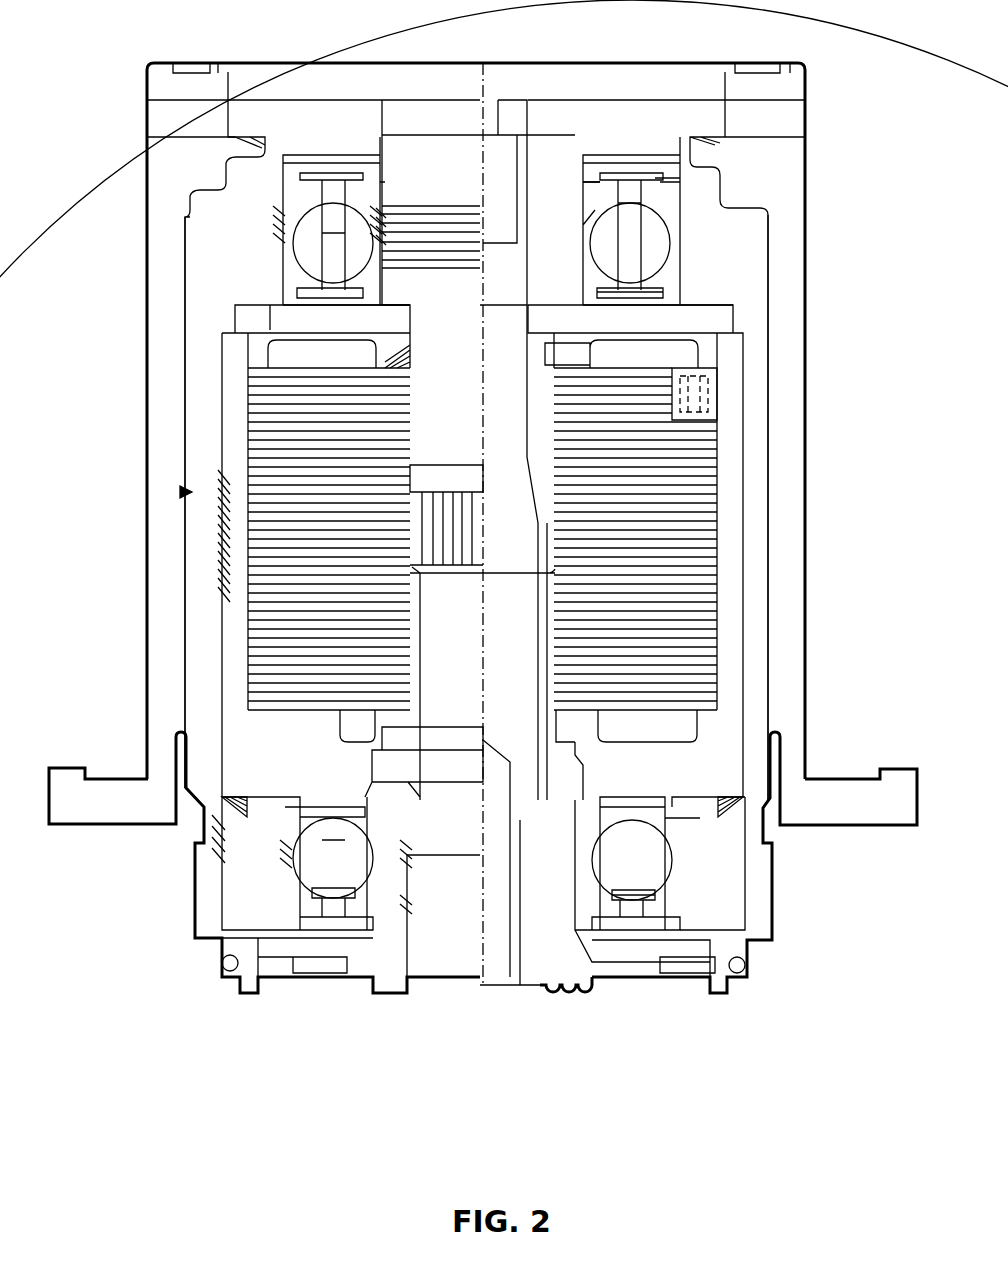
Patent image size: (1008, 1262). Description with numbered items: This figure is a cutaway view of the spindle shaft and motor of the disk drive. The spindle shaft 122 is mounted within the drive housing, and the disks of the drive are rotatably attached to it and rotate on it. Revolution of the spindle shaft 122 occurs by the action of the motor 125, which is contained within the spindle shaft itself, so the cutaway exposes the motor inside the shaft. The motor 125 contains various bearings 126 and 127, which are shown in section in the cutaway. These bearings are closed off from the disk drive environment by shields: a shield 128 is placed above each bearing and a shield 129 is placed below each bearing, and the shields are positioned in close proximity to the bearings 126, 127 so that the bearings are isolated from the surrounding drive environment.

The spindle shaft 122 is at (138, 537).
The motor 125 is at (765, 520).
The bearing 126 is at (631, 228).
The bearing 127 is at (620, 875).
The shield above bearing 128 is at (657, 178).
The shield below bearing 129 is at (665, 292).